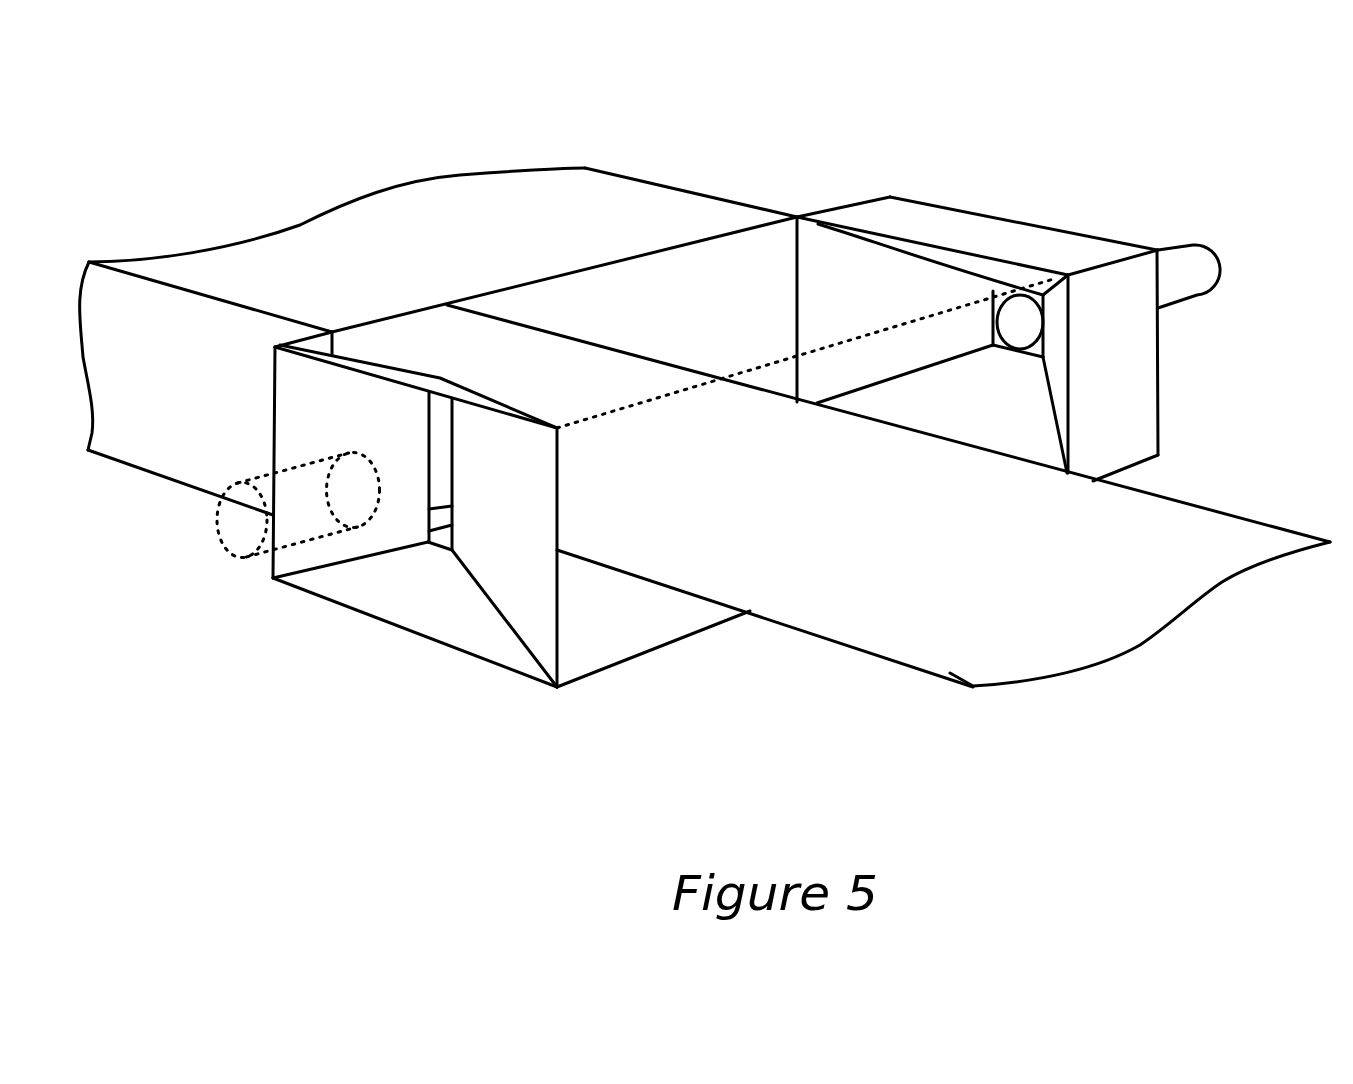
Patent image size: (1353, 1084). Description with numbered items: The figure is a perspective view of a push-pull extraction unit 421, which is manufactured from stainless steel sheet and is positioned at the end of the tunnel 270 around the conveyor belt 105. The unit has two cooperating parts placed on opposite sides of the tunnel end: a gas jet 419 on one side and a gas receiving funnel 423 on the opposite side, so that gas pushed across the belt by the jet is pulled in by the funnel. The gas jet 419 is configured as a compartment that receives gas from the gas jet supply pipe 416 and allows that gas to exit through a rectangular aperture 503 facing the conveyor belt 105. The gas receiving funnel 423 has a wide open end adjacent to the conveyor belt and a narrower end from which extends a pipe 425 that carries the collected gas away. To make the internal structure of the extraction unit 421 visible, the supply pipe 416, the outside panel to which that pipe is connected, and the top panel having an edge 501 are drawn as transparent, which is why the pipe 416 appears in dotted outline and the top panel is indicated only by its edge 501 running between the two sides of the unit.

The conveyor belt 105 is at (1013, 603).
The tunnel 270 is at (598, 195).
The gas jet supply pipe 416 is at (285, 548).
The gas jet 419 is at (545, 627).
The push-pull extraction unit 421 is at (1205, 385).
The gas receiving funnel 423 is at (1067, 435).
The pipe 425 is at (1170, 252).
The edge of top panel 501 is at (827, 348).
The rectangular aperture 503 is at (453, 508).